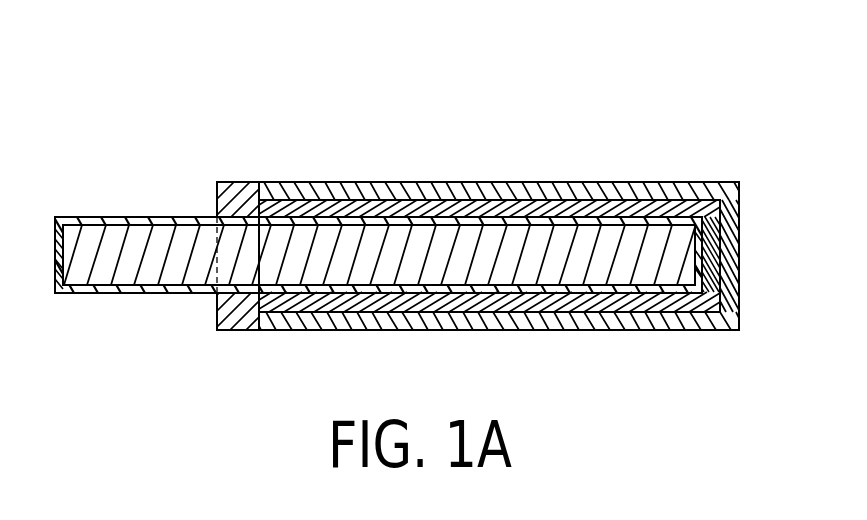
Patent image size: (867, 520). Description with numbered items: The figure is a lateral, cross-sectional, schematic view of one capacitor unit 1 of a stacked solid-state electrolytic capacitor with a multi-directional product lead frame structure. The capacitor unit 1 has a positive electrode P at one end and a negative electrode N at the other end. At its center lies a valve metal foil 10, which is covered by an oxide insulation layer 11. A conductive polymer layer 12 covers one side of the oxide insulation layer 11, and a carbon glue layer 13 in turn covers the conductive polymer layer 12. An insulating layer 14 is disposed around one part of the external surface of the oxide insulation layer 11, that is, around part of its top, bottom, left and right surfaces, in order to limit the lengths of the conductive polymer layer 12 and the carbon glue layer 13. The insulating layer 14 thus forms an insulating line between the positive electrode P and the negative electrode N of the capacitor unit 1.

The capacitor unit 1 is at (420, 169).
The positive electrode P is at (420, 203).
The negative electrode N is at (519, 213).
The valve metal foil 10 is at (714, 236).
The oxide insulation layer 11 is at (703, 255).
The conductive polymer layer 12 is at (705, 280).
The carbon glue layer 13 is at (726, 297).
The insulating layer 14 is at (233, 192).